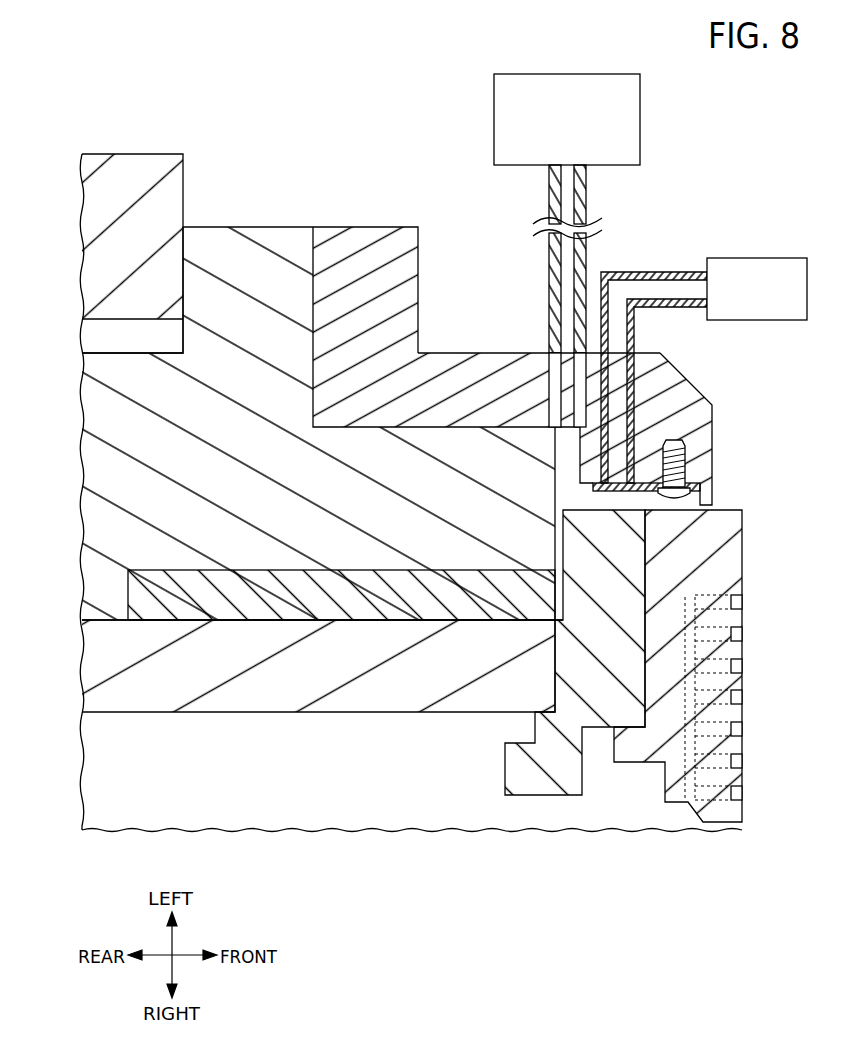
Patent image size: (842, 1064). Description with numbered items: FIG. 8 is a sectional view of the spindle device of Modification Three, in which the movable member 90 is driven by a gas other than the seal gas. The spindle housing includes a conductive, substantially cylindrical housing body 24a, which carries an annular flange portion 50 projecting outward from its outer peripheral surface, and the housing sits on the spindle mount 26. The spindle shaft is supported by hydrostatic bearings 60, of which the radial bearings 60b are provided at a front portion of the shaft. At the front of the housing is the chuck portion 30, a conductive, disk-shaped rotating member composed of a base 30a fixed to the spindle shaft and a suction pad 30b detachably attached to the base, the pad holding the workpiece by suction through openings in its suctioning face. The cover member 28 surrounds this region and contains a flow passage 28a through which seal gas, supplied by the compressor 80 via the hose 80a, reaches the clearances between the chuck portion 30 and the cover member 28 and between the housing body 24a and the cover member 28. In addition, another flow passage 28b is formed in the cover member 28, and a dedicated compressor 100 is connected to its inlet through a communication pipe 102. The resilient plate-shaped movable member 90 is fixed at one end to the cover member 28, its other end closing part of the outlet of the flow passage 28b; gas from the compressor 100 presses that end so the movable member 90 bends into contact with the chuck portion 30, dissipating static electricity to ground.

The housing body 24a is at (318, 399).
The spindle mount 26 is at (130, 173).
The cover member 28 is at (547, 366).
The flow passage 28a is at (567, 388).
The flow passage 28b is at (618, 418).
The chuck portion 30 is at (665, 691).
The base 30a is at (533, 785).
The suction pad 30b is at (678, 795).
The flange portion 50 is at (262, 243).
The bearings 60 is at (341, 730).
The radial bearings 60b is at (395, 605).
The compressor 80 is at (623, 120).
The hose 80a is at (580, 205).
The movable member 90 is at (652, 488).
The compressor 100 is at (765, 257).
The communication pipe 102 is at (668, 272).